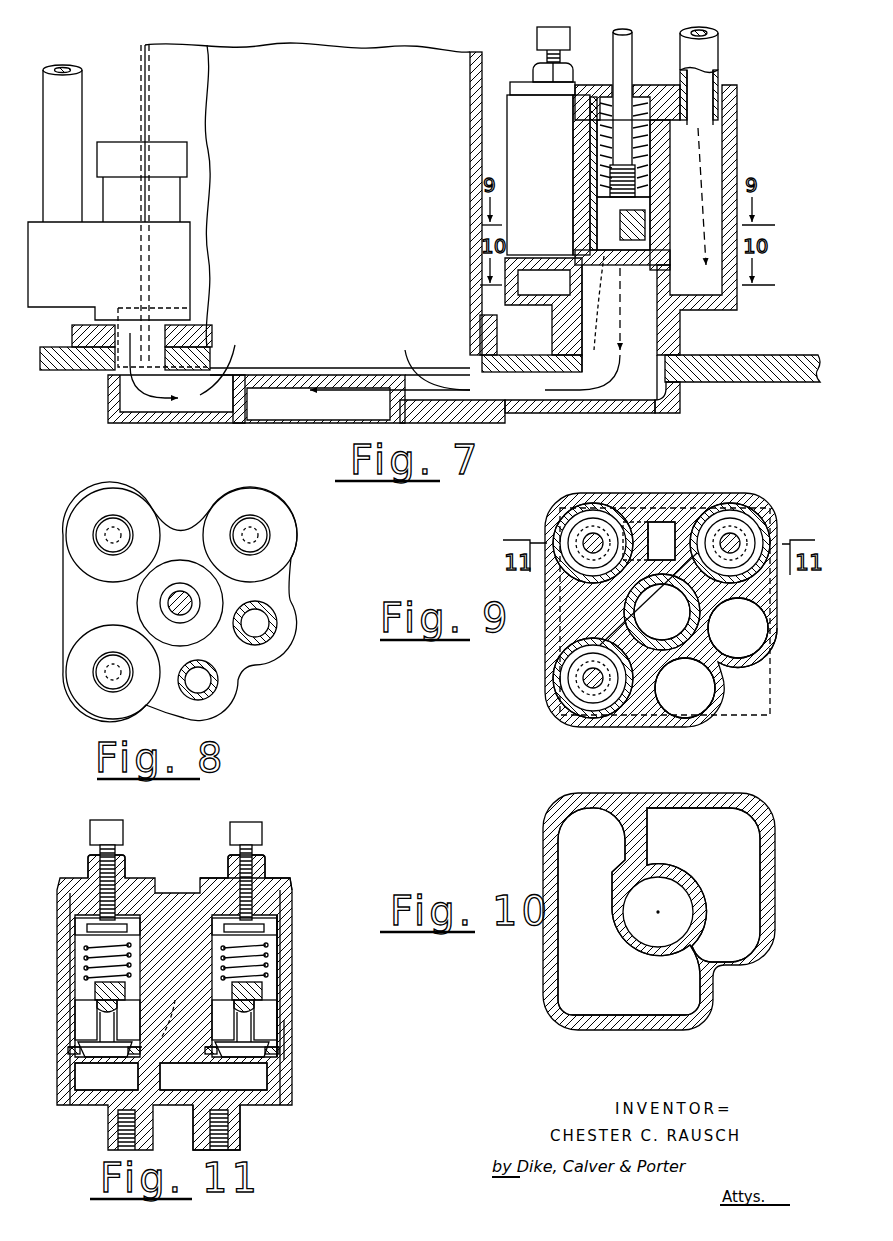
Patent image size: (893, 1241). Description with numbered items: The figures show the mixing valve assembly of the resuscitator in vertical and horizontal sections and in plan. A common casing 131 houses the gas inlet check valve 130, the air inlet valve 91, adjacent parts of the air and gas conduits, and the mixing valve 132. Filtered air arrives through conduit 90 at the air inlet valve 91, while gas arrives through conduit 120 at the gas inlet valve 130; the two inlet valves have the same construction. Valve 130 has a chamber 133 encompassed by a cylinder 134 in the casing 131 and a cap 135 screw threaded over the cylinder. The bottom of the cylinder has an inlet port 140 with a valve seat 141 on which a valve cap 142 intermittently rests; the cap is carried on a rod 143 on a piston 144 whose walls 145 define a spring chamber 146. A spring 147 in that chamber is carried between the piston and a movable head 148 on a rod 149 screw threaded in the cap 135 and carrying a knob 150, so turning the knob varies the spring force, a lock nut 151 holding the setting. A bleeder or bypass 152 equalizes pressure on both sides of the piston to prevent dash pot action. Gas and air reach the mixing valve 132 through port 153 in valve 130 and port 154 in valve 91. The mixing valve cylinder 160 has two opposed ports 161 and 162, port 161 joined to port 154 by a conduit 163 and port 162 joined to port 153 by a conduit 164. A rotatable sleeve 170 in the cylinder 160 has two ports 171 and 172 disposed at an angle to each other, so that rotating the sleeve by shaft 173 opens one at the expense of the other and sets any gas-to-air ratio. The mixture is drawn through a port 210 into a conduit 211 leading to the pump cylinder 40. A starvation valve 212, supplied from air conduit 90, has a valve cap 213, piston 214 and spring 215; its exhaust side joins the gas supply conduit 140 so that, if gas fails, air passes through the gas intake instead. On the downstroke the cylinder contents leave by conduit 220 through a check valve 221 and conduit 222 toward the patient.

In FIG. 7, the pump cylinder 40 is at (342, 156).
In FIG. 7, the conduit 90 is at (536, 289).
In FIG. 8, the conduit 90 is at (204, 691).
In FIG. 9, the conduit 90 is at (700, 700).
In FIG. 10, the conduit 90 is at (642, 1008).
In FIG. 11, the conduit 90 is at (96, 1078).
In FIG. 8, the air inlet valve 91 is at (97, 683).
In FIG. 9, the air inlet valve 91 is at (577, 682).
In FIG. 7, the conduit 120 is at (707, 95).
In FIG. 8, the conduit 120 is at (259, 629).
In FIG. 9, the conduit 120 is at (747, 650).
In FIG. 10, the conduit 120 is at (748, 912).
In FIG. 11, the conduit 120 is at (262, 1090).
In FIG. 8, the gas inlet check valve 130 is at (264, 527).
In FIG. 9, the gas inlet check valve 130 is at (740, 520).
In FIG. 11, the gas inlet check valve 130 is at (232, 827).
In FIG. 7, the casing 131 is at (739, 150).
In FIG. 8, the casing 131 is at (62, 606).
In FIG. 9, the casing 131 is at (632, 497).
In FIG. 10, the casing 131 is at (553, 805).
In FIG. 11, the casing 131 is at (292, 1015).
In FIG. 7, the mixing valve 132 is at (590, 166).
In FIG. 9, the mixing valve 132 is at (645, 607).
In FIG. 11, the chamber 133 is at (286, 1030).
In FIG. 11, the cylinder 134 is at (285, 1010).
In FIG. 11, the cap 135 is at (292, 887).
In FIG. 11, the inlet port 140 is at (260, 1068).
In FIG. 11, the valve seat 141 is at (213, 1076).
In FIG. 9, the valve cap 142 is at (742, 535).
In FIG. 11, the valve cap 142 is at (229, 1058).
In FIG. 9, the rod 143 is at (735, 545).
In FIG. 11, the rod 143 is at (251, 1040).
In FIG. 11, the piston 144 is at (285, 990).
In FIG. 11, the walls 145 is at (285, 928).
In FIG. 11, the spring chamber 146 is at (215, 960).
In FIG. 11, the spring 147 is at (218, 950).
In FIG. 11, the movable head 148 is at (283, 920).
In FIG. 11, the rod 149 is at (253, 853).
In FIG. 11, the knob 150 is at (264, 829).
In FIG. 11, the lock nut 151 is at (229, 862).
In FIG. 11, the bleeder or bypass 152 is at (195, 1001).
In FIG. 9, the port 153 is at (698, 551).
In FIG. 11, the port 153 is at (205, 1016).
In FIG. 9, the port 154 is at (685, 688).
In FIG. 7, the valve cylinder 160 is at (600, 177).
In FIG. 9, the valve cylinder 160 is at (636, 542).
In FIG. 9, the port 161 is at (626, 645).
In FIG. 7, the port 162 is at (629, 262).
In FIG. 9, the port 162 is at (738, 628).
In FIG. 9, the conduit 163 is at (640, 628).
In FIG. 9, the conduit 164 is at (663, 541).
In FIG. 7, the rotatable sleeve 170 is at (645, 186).
In FIG. 9, the rotatable sleeve 170 is at (738, 628).
In FIG. 9, the port 171 is at (662, 612).
In FIG. 7, the port 172 is at (626, 230).
In FIG. 9, the port 172 is at (662, 612).
In FIG. 7, the shaft 173 is at (629, 51).
In FIG. 8, the shaft 173 is at (182, 595).
In FIG. 7, the port 210 is at (608, 257).
In FIG. 7, the conduit 211 is at (632, 389).
In FIG. 7, the starvation valve 212 is at (536, 38).
In FIG. 8, the starvation valve 212 is at (106, 517).
In FIG. 9, the starvation valve 212 is at (585, 528).
In FIG. 11, the starvation valve 212 is at (89, 824).
In FIG. 11, the valve cap 213 is at (88, 1041).
In FIG. 11, the piston 214 is at (82, 963).
In FIG. 11, the spring 215 is at (87, 957).
In FIG. 7, the conduit 220 is at (208, 403).
In FIG. 7, the check valve 221 is at (108, 141).
In FIG. 7, the conduit 222 is at (73, 58).